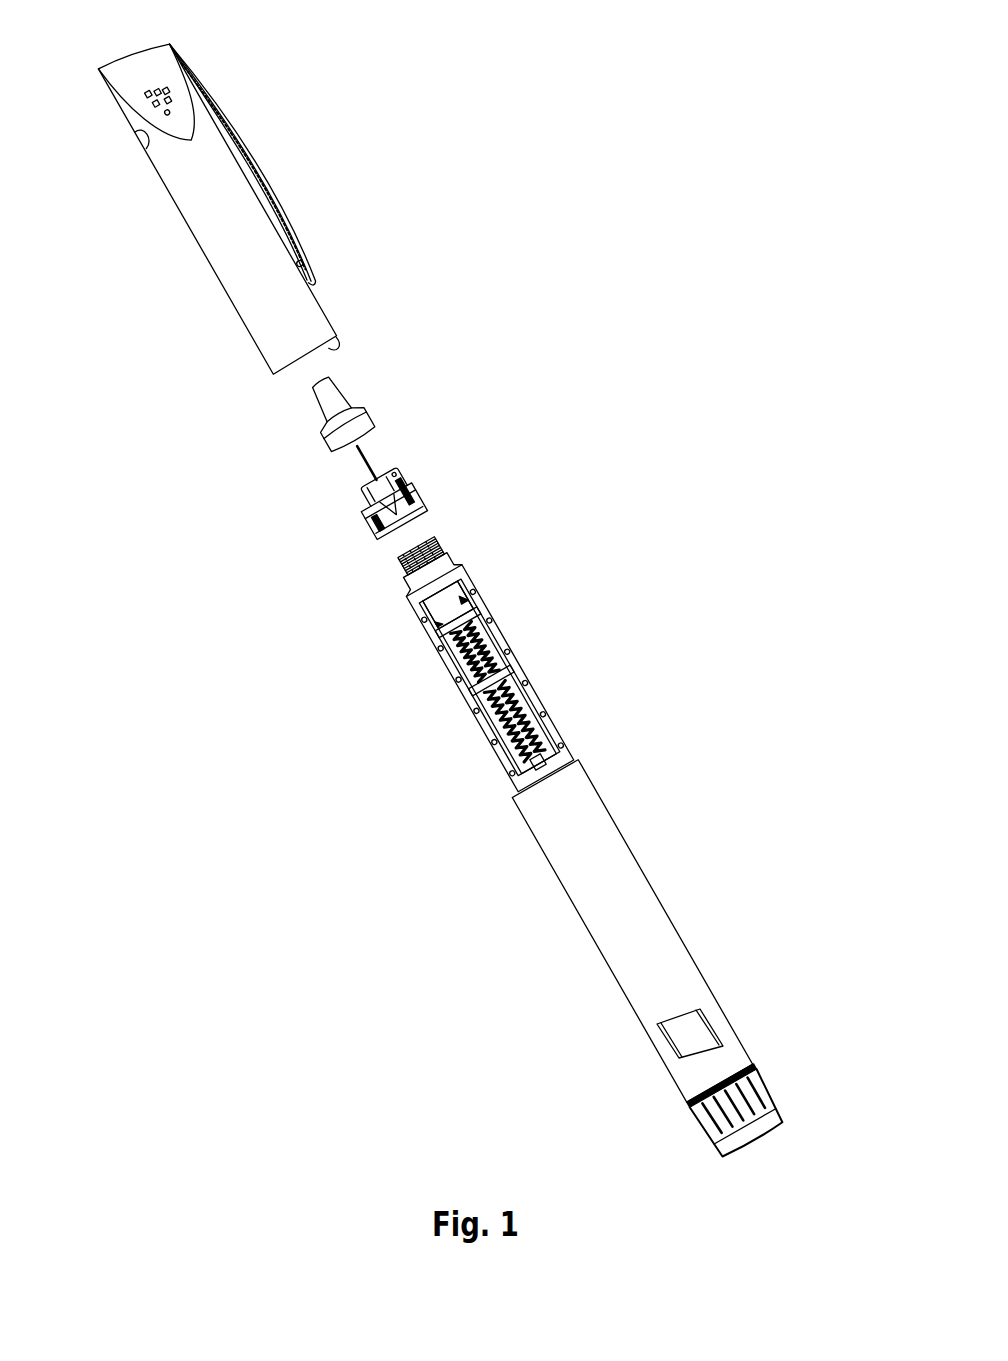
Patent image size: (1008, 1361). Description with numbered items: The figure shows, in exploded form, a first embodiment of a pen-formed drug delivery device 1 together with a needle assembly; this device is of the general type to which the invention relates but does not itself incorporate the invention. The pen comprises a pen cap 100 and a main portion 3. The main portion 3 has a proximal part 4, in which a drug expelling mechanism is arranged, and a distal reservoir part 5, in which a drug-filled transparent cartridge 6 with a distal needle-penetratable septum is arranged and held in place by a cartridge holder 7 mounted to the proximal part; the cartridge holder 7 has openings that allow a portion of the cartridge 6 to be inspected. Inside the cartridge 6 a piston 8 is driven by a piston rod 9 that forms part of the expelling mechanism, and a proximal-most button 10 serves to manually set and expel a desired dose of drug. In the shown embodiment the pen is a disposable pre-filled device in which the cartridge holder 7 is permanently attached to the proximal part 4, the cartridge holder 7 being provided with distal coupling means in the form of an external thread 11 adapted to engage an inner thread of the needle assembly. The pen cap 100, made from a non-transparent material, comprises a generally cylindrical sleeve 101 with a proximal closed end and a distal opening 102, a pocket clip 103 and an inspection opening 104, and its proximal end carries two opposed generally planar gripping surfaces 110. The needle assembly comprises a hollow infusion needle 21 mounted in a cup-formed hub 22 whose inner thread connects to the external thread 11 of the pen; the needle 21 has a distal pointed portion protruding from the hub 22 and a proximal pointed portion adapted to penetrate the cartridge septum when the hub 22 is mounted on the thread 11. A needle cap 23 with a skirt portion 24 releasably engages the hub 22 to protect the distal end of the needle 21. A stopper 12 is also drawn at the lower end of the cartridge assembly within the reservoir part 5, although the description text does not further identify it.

The pen-formed drug delivery device 1 is at (762, 203).
The main portion 3 is at (683, 938).
The proximal part 4 is at (605, 840).
The distal reservoir part 5 is at (515, 657).
The cartridge 6 is at (452, 592).
The cartridge holder 7 is at (467, 693).
The piston 8 is at (438, 627).
The piston rod 9 is at (513, 737).
The button 10 is at (763, 1083).
The external thread 11 is at (402, 568).
The stopper 12 is at (545, 763).
The hollow infusion needle 21 is at (365, 467).
The hub 22 is at (423, 500).
The needle cap 23 is at (332, 403).
The skirt portion 24 is at (363, 420).
The pen cap 100 is at (327, 303).
The cylindrical sleeve 101 is at (257, 291).
The distal opening 102 is at (330, 347).
The pocket clip 103 is at (243, 137).
The inspection opening 104 is at (142, 133).
The gripping surfaces 110 is at (135, 60).